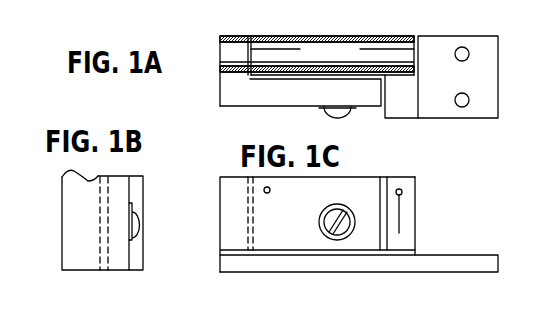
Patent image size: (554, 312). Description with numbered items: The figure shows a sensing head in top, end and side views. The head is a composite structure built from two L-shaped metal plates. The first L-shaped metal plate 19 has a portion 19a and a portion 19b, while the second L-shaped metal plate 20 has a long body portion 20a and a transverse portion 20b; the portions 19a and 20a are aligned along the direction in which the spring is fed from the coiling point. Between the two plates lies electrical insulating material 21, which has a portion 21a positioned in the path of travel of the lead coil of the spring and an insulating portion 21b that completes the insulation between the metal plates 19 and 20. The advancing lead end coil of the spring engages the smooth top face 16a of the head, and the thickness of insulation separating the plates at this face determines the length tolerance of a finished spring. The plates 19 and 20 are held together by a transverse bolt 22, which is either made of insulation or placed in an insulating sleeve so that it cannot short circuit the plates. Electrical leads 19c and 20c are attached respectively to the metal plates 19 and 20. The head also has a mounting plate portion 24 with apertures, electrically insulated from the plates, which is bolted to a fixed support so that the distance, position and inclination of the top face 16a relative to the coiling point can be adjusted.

In FIG. 1B, the top face 16a is at (100, 177).
In FIG. 1A, the L-shaped metal plate 19 is at (220, 85).
In FIG. 1B, the L-shaped metal plate 19 is at (70, 222).
In FIG. 1A, the portion of metal plate 19a is at (241, 39).
In FIG. 1B, the portion of metal plate 19a is at (70, 170).
In FIG. 1A, the portion of metal plate 19b is at (293, 93).
In FIG. 1C, the electrical lead 19c is at (263, 190).
In FIG. 1A, the L-shaped metal plate 20 is at (393, 57).
In FIG. 1A, the long body portion 20a is at (363, 57).
In FIG. 1A, the transverse portion 20b is at (402, 108).
In FIG. 1B, the transverse portion 20b is at (140, 263).
In FIG. 1C, the transverse portion 20b is at (407, 214).
In FIG. 1C, the electrical lead 20c is at (405, 226).
In FIG. 1A, the electrical insulating material 21 is at (250, 37).
In FIG. 1A, the portion of insulating material 21a is at (250, 62).
In FIG. 1A, the insulating portion 21b is at (272, 77).
In FIG. 1A, the transverse bolt 22 is at (342, 113).
In FIG. 1B, the transverse bolt 22 is at (139, 217).
In FIG. 1C, the transverse bolt 22 is at (320, 213).
In FIG. 1C, the mounting plate portion 24 is at (300, 259).